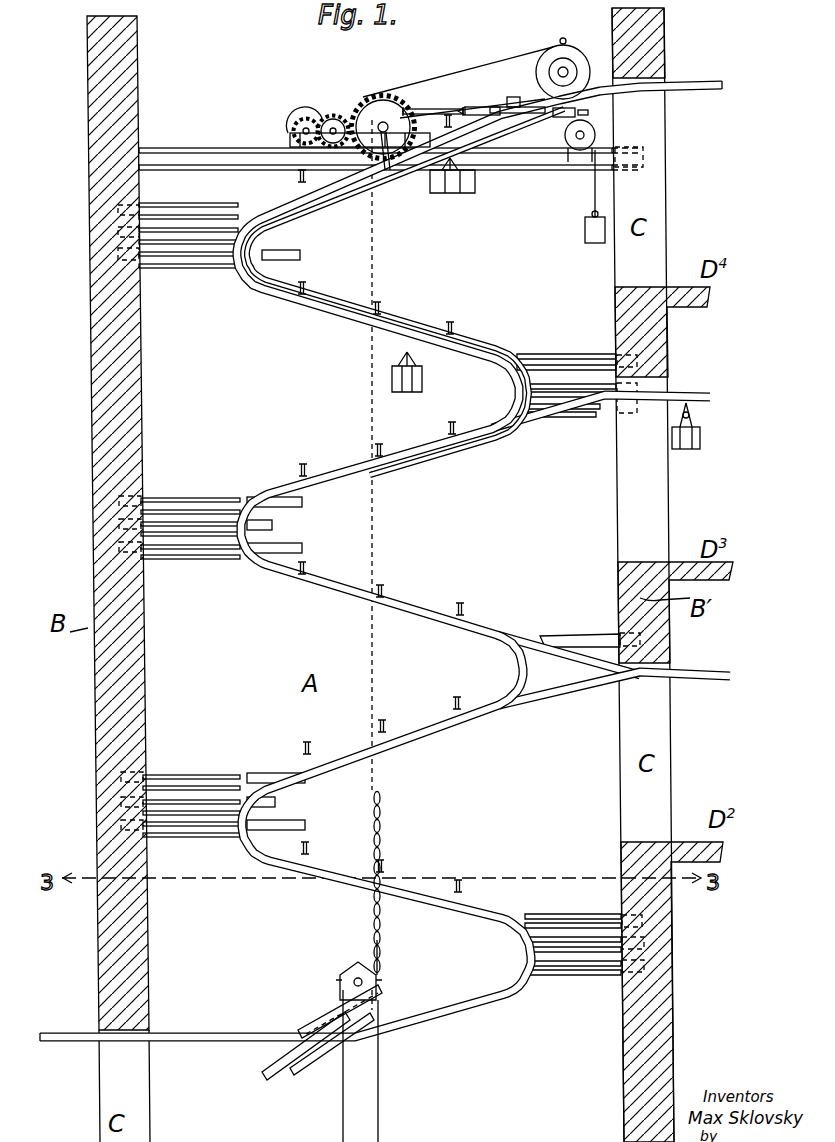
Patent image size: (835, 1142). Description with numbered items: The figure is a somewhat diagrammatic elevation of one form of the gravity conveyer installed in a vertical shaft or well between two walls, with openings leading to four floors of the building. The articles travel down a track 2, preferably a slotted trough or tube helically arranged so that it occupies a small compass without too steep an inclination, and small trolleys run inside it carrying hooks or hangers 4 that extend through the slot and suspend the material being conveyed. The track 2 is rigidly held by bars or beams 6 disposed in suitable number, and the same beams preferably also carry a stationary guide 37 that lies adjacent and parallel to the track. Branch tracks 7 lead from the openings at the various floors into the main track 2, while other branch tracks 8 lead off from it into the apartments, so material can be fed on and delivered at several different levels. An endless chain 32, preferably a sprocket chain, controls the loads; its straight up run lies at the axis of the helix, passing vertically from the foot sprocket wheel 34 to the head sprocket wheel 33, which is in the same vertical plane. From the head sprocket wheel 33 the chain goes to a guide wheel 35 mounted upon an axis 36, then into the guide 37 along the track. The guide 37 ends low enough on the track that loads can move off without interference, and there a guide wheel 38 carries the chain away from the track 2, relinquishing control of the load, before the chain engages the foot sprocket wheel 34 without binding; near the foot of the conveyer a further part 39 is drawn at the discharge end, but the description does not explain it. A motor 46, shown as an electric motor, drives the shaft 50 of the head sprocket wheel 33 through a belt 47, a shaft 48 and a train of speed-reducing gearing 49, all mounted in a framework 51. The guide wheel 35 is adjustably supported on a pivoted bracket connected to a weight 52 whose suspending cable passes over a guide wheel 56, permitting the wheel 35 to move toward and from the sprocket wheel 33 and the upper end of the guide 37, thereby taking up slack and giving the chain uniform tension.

The track 2 is at (288, 198).
The hooks or hangers 4 is at (693, 410).
The bars or beams 6 is at (188, 497).
The branch tracks 7 is at (592, 414).
The branch tracks 8 is at (568, 640).
The endless chain 32 is at (432, 106).
The head sprocket wheel 33 is at (395, 94).
The foot sprocket wheel 34 is at (380, 962).
The guide wheel 35 is at (488, 106).
The axis 36 is at (517, 94).
The stationary guide 37 is at (322, 318).
The guide wheel 38 is at (268, 1080).
The guide plate 39 is at (306, 1028).
The motor 46 is at (550, 54).
The belt 47 is at (447, 90).
The shaft 48 is at (300, 116).
The train of speed-reducing gearing 49 is at (336, 114).
The shaft of the head sprocket wheel 50 is at (390, 150).
The framework 51 is at (290, 138).
The weight 52 is at (584, 229).
The guide wheel 56 is at (588, 126).